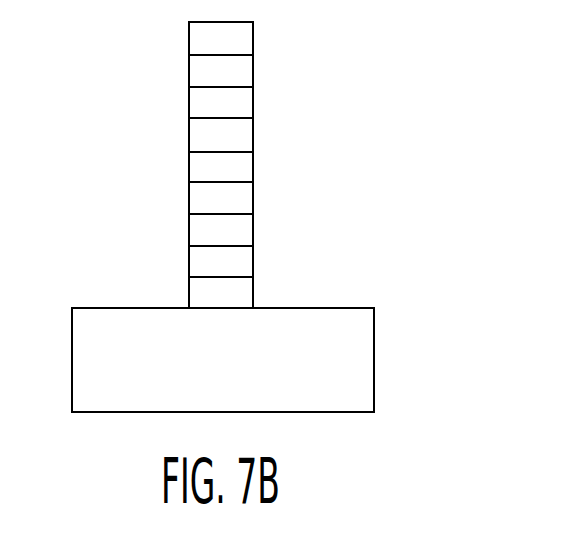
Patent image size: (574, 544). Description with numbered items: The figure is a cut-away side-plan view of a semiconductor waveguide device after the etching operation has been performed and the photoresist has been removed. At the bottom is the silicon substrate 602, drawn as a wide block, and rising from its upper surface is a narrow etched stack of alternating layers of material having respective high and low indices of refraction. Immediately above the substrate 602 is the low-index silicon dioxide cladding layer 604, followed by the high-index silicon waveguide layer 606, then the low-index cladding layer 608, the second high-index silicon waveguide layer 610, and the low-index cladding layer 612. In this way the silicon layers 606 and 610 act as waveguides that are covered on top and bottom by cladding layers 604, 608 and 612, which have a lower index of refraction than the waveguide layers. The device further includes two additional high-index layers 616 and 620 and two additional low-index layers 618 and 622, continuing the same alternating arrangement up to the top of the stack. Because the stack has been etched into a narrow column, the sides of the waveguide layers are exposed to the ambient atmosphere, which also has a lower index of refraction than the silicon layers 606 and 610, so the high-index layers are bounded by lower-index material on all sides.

The silicon substrate 602 is at (357, 372).
The silicon dioxide cladding layer 604 is at (247, 293).
The silicon waveguide layer 606 is at (247, 259).
The silicon dioxide cladding layer 608 is at (244, 232).
The silicon waveguide layer 610 is at (247, 204).
The silicon dioxide cladding layer 612 is at (247, 172).
The additional high-index layer 616 is at (247, 139).
The additional low-index layer 618 is at (247, 105).
The additional high-index layer 620 is at (247, 73).
The additional low-index layer 622 is at (247, 40).